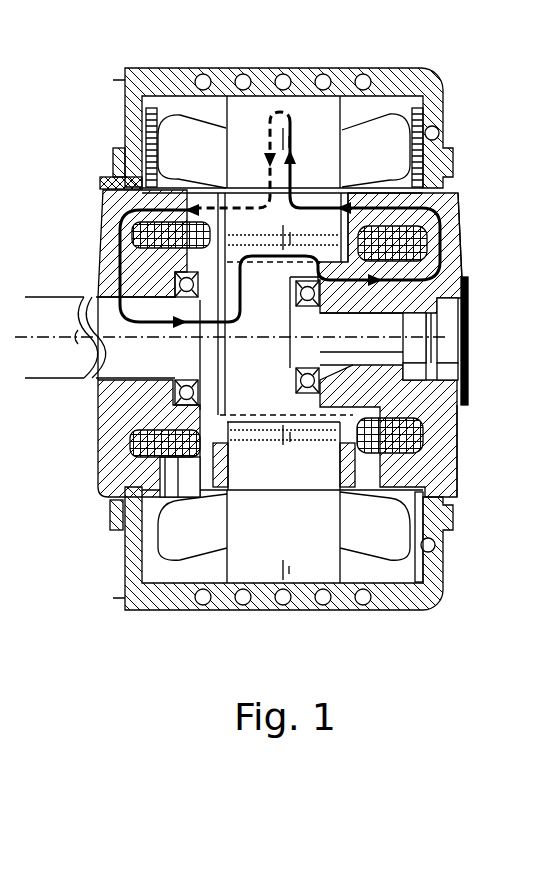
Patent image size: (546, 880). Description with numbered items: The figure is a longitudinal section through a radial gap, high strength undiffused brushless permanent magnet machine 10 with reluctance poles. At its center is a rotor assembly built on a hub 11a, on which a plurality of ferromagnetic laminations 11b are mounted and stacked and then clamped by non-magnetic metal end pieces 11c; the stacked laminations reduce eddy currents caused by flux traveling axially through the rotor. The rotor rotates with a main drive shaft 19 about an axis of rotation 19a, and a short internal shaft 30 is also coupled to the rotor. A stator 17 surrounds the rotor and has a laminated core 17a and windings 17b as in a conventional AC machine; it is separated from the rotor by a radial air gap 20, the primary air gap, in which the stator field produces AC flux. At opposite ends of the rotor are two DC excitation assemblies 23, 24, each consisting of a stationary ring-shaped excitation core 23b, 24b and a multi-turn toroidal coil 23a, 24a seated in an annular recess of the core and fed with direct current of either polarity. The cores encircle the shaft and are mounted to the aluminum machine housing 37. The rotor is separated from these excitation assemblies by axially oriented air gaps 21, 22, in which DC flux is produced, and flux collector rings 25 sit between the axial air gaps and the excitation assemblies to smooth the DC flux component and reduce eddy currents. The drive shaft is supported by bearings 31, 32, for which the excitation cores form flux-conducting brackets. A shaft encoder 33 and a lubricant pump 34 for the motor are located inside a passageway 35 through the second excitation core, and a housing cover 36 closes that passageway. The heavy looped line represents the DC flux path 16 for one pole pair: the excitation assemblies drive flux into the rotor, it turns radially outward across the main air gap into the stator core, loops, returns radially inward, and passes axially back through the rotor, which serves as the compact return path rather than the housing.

The machine 10 is at (488, 64).
The hub 11a is at (276, 380).
The laminations 11b is at (265, 475).
The end pieces 11c is at (170, 497).
The flux 16 is at (274, 114).
The stator 17 is at (337, 82).
The laminated core 17a is at (261, 535).
The windings 17b is at (174, 540).
The main drive shaft 19 is at (87, 315).
The axis of rotation 19a is at (80, 338).
The radial air gap 20 is at (250, 190).
The air gap 21 is at (215, 200).
The air gap 22 is at (354, 197).
The DC excitation assembly 23 is at (100, 215).
The multi-turn coil 23a is at (118, 180).
The excitation core 23b is at (97, 262).
The DC excitation assembly 24 is at (462, 213).
The multi-turn coil 24a is at (432, 257).
The excitation core 24b is at (463, 272).
The flux collector rings 25 is at (452, 178).
The short internal shaft 30 is at (465, 390).
The bearing 31 is at (150, 375).
The bearing 32 is at (317, 390).
The shaft encoder 33 is at (418, 340).
The pump 34 is at (450, 363).
The passageway 35 is at (378, 352).
The housing cover 36 is at (466, 383).
The machine housing 37 is at (446, 592).